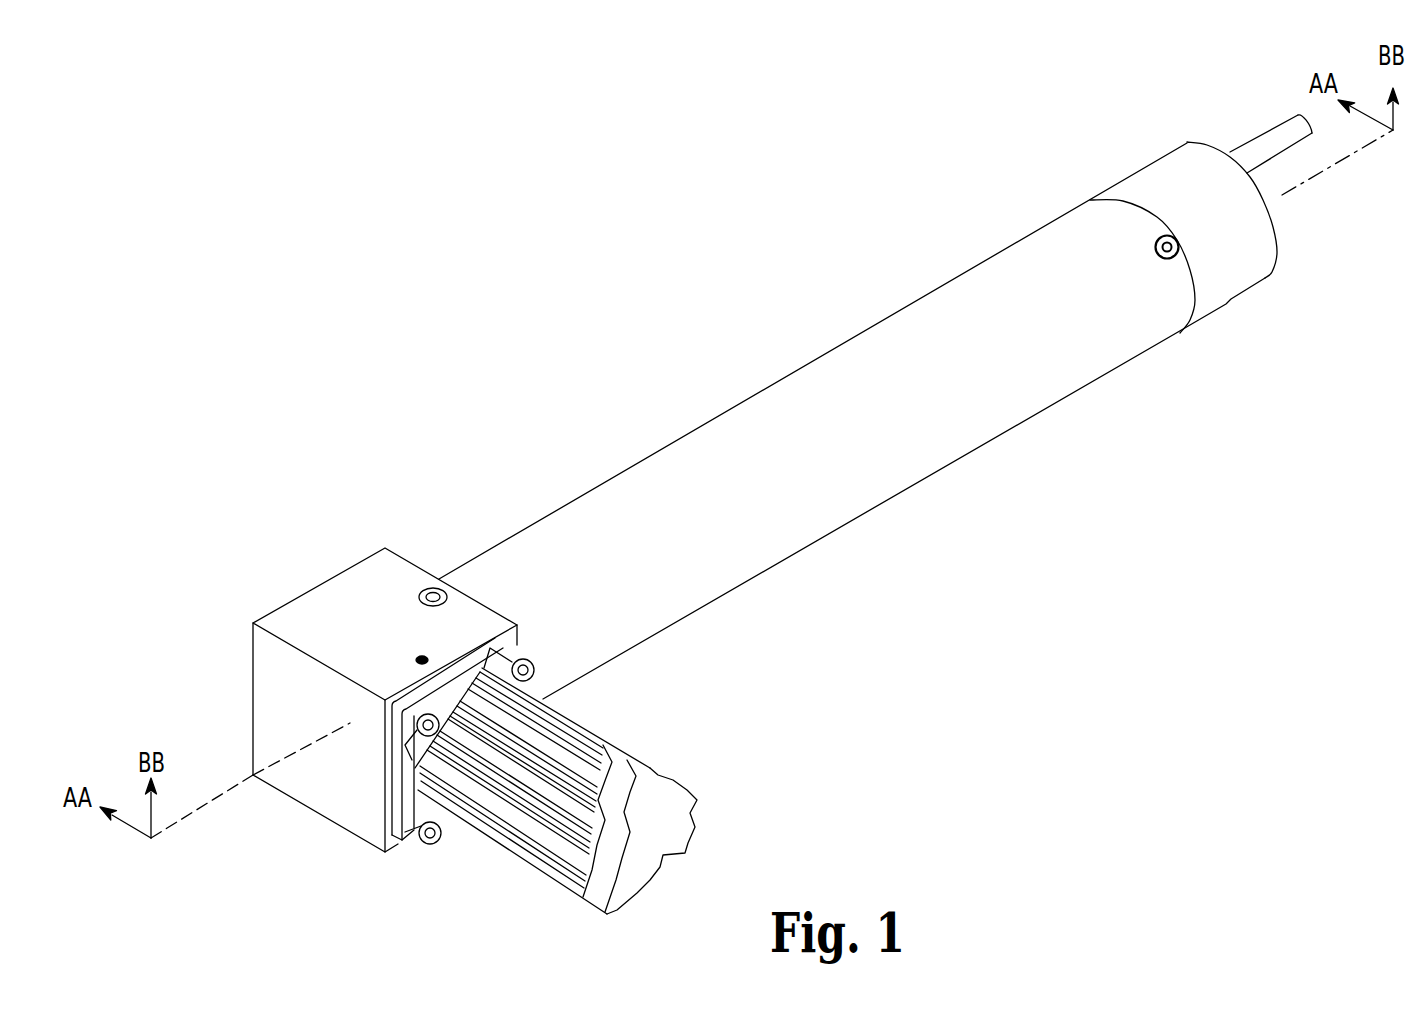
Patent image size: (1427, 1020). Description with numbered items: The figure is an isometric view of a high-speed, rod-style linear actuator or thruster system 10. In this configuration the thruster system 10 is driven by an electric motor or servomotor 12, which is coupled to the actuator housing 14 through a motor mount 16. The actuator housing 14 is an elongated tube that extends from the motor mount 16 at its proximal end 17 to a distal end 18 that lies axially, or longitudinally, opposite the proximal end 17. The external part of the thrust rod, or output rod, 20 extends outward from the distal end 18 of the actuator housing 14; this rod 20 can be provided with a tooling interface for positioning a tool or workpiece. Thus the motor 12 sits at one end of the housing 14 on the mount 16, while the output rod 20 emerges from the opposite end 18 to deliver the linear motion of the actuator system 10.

The linear actuator system 10 is at (412, 237).
The electric motor 12 is at (637, 764).
The actuator housing 14 is at (736, 418).
The motor mount 16 is at (337, 597).
The proximal end 17 is at (460, 510).
The distal end 18 is at (1152, 128).
The thrust rod 20 is at (1257, 137).